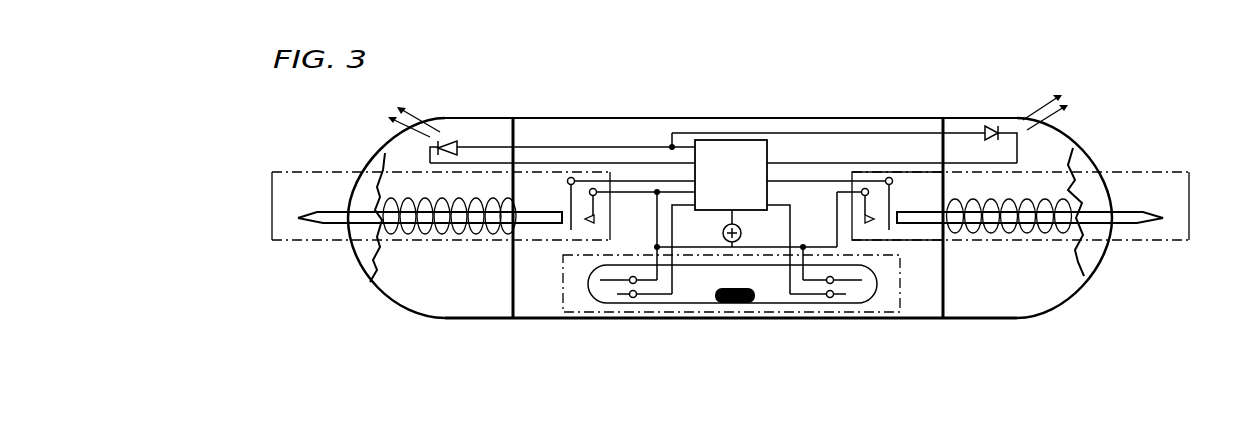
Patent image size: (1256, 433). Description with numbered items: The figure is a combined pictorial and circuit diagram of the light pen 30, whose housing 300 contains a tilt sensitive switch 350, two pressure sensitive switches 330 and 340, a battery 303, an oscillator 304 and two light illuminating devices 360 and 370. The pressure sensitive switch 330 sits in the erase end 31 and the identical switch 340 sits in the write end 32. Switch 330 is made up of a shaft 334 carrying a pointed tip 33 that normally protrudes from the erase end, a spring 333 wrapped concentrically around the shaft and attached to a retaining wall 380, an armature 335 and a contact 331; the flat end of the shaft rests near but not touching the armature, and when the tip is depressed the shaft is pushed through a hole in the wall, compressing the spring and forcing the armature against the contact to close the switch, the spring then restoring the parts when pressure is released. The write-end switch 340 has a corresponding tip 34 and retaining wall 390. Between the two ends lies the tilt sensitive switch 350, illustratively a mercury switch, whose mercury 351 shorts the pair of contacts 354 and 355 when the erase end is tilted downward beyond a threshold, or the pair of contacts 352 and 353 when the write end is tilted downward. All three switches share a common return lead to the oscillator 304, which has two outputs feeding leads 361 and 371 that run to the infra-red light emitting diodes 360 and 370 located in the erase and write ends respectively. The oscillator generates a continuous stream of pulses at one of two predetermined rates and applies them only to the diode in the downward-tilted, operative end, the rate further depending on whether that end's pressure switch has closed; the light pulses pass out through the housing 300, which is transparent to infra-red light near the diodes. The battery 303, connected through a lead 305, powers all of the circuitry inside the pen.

The light pen 30 is at (736, 111).
The erase end 31 is at (392, 149).
The write end 32 is at (1069, 148).
The tip 33 is at (299, 217).
The tip 34 is at (1160, 217).
The housing 300 is at (1027, 318).
The battery 303 is at (729, 228).
The oscillator 304 is at (767, 192).
The lead 305 is at (705, 223).
The pressure sensitive switch 330 is at (272, 190).
The contact 331 is at (596, 219).
The spring 333 is at (440, 236).
The shaft 334 is at (422, 229).
The armature 335 is at (607, 204).
The pressure sensitive switch 340 is at (1190, 180).
The tilt sensitive switch 350 is at (710, 308).
The mercury 351 is at (742, 272).
The contact 352 is at (853, 293).
The contact 353 is at (851, 290).
The contact 354 is at (612, 282).
The contact 355 is at (619, 296).
The light illuminating device 360 is at (452, 141).
The lead 361 is at (595, 161).
The light illuminating device 370 is at (992, 128).
The lead 371 is at (857, 161).
The retaining wall 380 is at (513, 302).
The retaining wall 390 is at (943, 272).